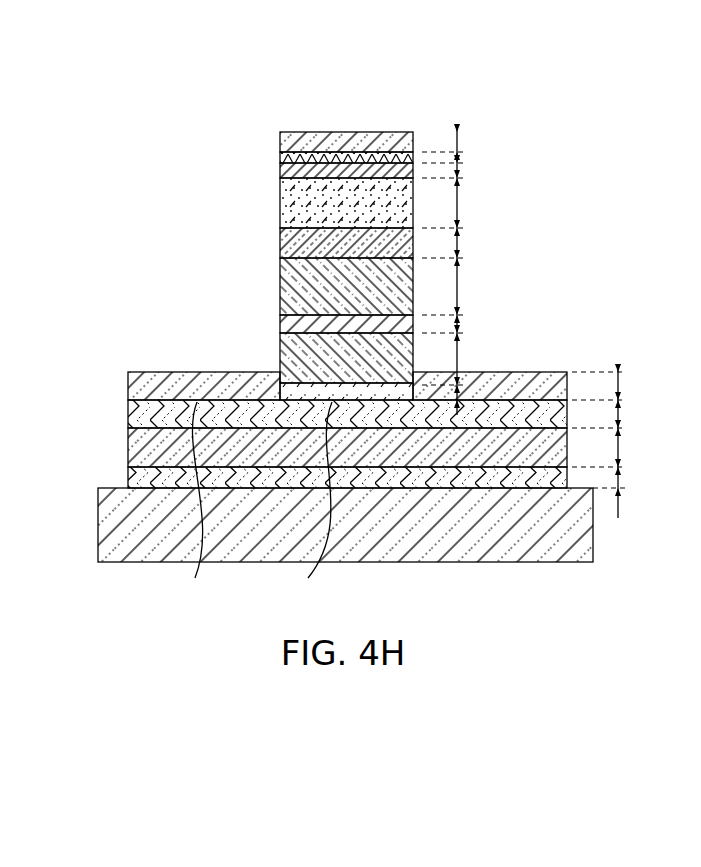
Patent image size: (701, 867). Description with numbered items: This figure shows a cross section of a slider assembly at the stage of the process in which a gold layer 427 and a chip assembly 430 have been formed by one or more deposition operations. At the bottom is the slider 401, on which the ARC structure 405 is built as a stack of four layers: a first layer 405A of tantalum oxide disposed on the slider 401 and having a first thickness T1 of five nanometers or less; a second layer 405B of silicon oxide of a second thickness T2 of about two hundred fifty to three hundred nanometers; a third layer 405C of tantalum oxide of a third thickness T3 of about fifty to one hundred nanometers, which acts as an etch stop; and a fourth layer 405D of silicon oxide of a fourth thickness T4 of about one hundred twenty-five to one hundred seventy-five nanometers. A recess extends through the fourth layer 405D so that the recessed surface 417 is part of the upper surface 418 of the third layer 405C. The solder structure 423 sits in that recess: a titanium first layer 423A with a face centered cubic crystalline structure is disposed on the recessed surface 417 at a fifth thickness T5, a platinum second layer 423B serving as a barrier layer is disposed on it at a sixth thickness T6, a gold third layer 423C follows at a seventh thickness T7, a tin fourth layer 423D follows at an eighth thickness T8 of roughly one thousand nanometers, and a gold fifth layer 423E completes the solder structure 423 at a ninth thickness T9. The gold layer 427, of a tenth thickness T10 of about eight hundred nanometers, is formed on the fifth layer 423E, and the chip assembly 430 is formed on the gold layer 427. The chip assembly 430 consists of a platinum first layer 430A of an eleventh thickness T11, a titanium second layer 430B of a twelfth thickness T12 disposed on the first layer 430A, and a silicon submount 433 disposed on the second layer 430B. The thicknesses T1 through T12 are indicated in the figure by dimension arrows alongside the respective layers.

The slider 401 is at (100, 524).
The ARC structure 405 is at (362, 390).
The first layer 405A is at (130, 480).
The second layer 405B is at (130, 448).
The third layer 405C is at (130, 420).
The fourth layer 405D is at (130, 391).
The recessed surface 417 is at (308, 503).
The upper surface 418 is at (191, 503).
The solder structure 423 is at (260, 309).
The first layer 423A is at (292, 393).
The second layer 423B is at (290, 352).
The third layer 423C is at (293, 325).
The fourth layer 423D is at (295, 280).
The fifth layer 423E is at (290, 246).
The gold layer 427 is at (290, 212).
The chip assembly 430 is at (260, 117).
The first layer 430A is at (285, 170).
The second layer 430B is at (283, 158).
The submount 433 is at (290, 140).
The first thickness T1 is at (620, 479).
The second thickness T2 is at (620, 448).
The third thickness T3 is at (620, 412).
The fourth thickness T4 is at (620, 385).
The fifth thickness T5 is at (460, 398).
The sixth thickness T6 is at (459, 358).
The seventh thickness T7 is at (459, 320).
The eighth thickness T8 is at (459, 281).
The ninth thickness T9 is at (459, 243).
The tenth thickness T10 is at (459, 203).
The eleventh thickness T11 is at (459, 168).
The twelfth thickness T12 is at (459, 152).